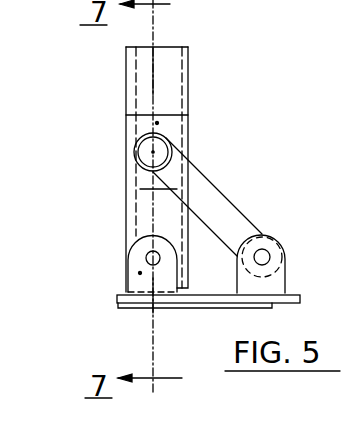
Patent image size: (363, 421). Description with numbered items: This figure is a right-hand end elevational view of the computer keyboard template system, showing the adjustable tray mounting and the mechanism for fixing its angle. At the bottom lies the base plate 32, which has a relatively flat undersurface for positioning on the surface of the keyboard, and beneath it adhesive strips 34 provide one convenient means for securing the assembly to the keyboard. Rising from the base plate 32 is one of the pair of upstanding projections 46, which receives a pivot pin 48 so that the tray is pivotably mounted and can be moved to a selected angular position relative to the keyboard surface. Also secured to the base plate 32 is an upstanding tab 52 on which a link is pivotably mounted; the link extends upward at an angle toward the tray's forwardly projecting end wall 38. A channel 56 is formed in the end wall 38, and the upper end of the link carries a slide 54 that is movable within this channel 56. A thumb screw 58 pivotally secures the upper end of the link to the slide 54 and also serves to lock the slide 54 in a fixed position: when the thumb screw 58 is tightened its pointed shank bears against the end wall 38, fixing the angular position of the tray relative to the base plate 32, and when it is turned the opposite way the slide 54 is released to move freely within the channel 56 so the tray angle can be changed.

The base plate 32 is at (300, 298).
The adhesive strips 34 is at (209, 311).
The endwalls 38 is at (189, 92).
The upstanding projections 46 is at (140, 273).
The pivot pins 48 is at (147, 257).
The upstanding tab 52 is at (270, 283).
The slide 54 is at (157, 123).
The channel 56 is at (162, 69).
The thumb screw 58 is at (153, 146).